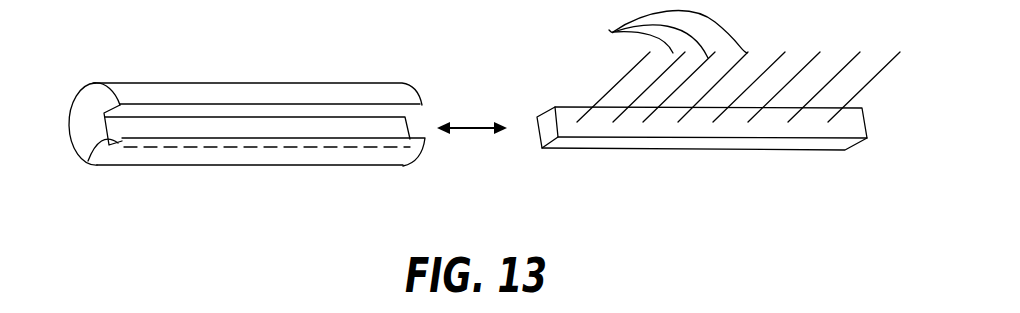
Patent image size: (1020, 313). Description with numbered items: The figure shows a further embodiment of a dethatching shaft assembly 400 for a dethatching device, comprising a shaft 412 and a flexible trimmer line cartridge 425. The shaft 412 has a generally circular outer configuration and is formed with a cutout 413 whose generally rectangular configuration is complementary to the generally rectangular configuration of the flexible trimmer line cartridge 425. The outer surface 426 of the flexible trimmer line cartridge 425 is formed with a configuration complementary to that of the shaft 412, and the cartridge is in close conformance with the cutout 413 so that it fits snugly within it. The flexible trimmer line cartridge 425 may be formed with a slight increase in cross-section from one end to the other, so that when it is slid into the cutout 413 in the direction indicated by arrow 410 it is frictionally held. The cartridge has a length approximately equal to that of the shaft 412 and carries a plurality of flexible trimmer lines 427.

The dethatching shaft assembly 400 is at (540, 192).
The arrow 410 is at (470, 129).
The shaft 412 is at (78, 108).
The cutout 413 is at (88, 162).
The flexible trimmer line cartridge 425 is at (658, 164).
The surface 426 is at (572, 121).
The flexible trimmer line 427 is at (622, 68).